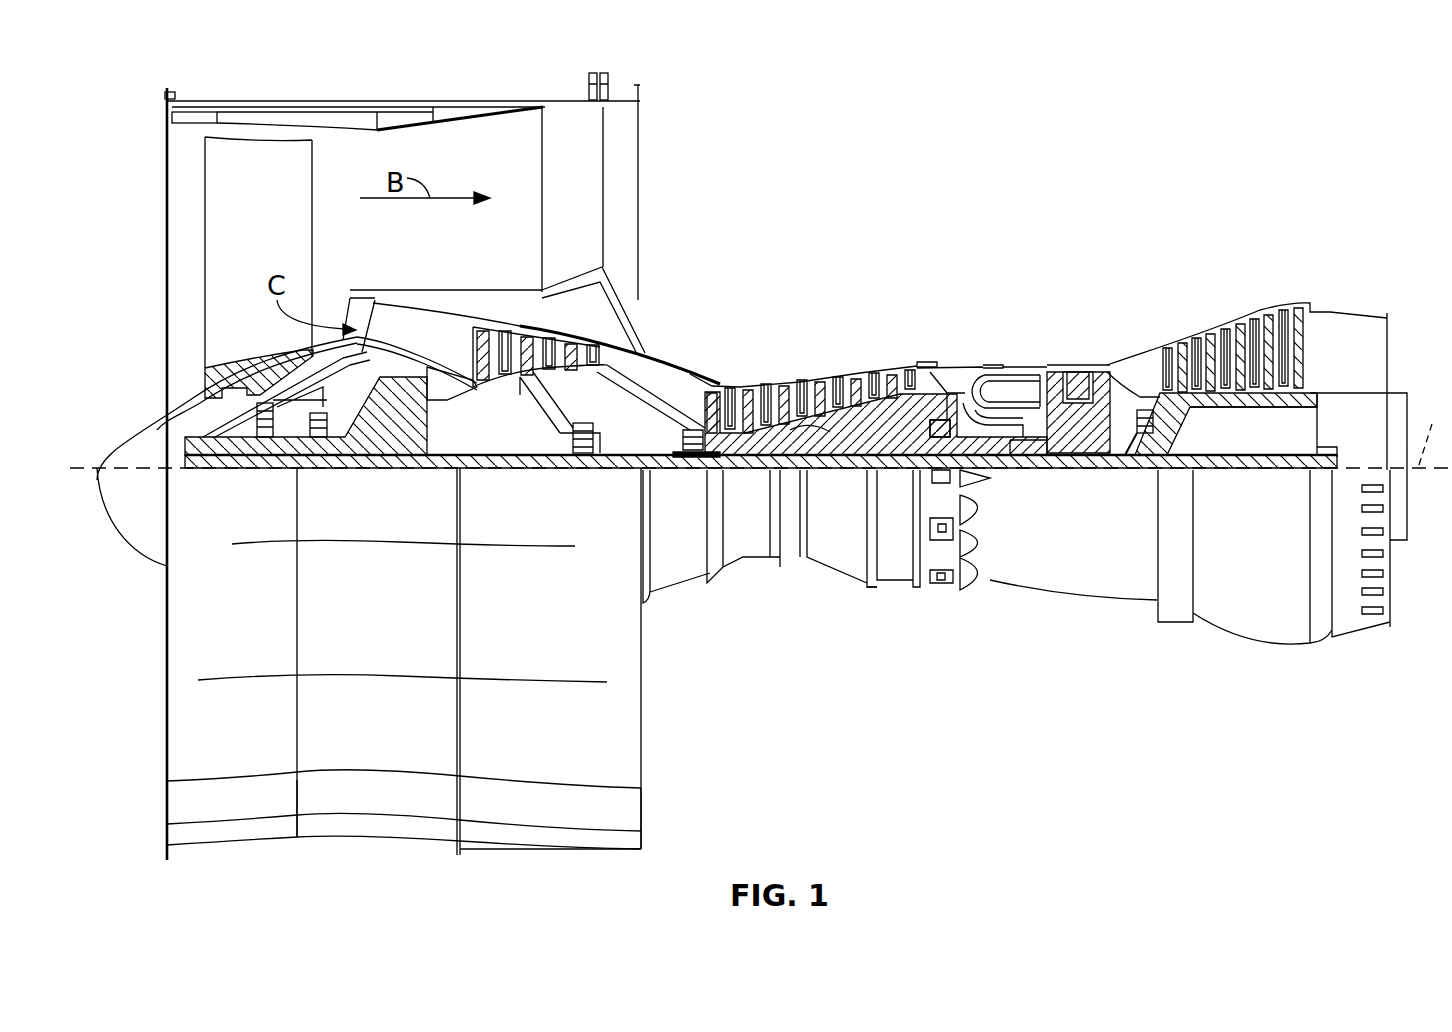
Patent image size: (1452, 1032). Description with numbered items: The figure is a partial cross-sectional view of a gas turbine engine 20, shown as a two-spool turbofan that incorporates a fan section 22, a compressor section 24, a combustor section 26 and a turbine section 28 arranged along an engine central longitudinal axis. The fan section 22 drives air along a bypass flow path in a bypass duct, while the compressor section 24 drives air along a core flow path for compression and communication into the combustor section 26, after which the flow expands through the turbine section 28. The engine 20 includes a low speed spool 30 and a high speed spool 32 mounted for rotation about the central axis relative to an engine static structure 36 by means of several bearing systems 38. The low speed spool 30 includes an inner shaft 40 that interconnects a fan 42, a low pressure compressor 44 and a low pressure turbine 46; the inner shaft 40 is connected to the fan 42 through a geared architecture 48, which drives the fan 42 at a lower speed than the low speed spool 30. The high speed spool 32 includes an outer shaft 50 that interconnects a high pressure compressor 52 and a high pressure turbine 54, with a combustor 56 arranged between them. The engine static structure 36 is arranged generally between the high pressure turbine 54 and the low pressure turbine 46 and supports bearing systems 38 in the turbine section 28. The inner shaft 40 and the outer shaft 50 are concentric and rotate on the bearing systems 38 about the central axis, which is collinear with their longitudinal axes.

The gas turbine engine 20 is at (1207, 143).
The fan section 22 is at (241, 77).
The compressor section 24 is at (827, 332).
The combustor section 26 is at (997, 332).
The turbine section 28 is at (1139, 315).
The low speed spool 30 is at (865, 468).
The high speed spool 32 is at (920, 413).
The engine static structure 36 is at (905, 587).
The bearing systems 38 is at (266, 440).
The inner shaft 40 is at (652, 462).
The fan 42 is at (282, 225).
The low pressure compressor 44 is at (553, 343).
The low pressure turbine 46 is at (1245, 332).
The geared architecture 48 is at (405, 433).
The outer shaft 50 is at (1025, 450).
The high pressure compressor 52 is at (815, 422).
The high pressure turbine 54 is at (1080, 364).
The combustor 56 is at (1000, 387).